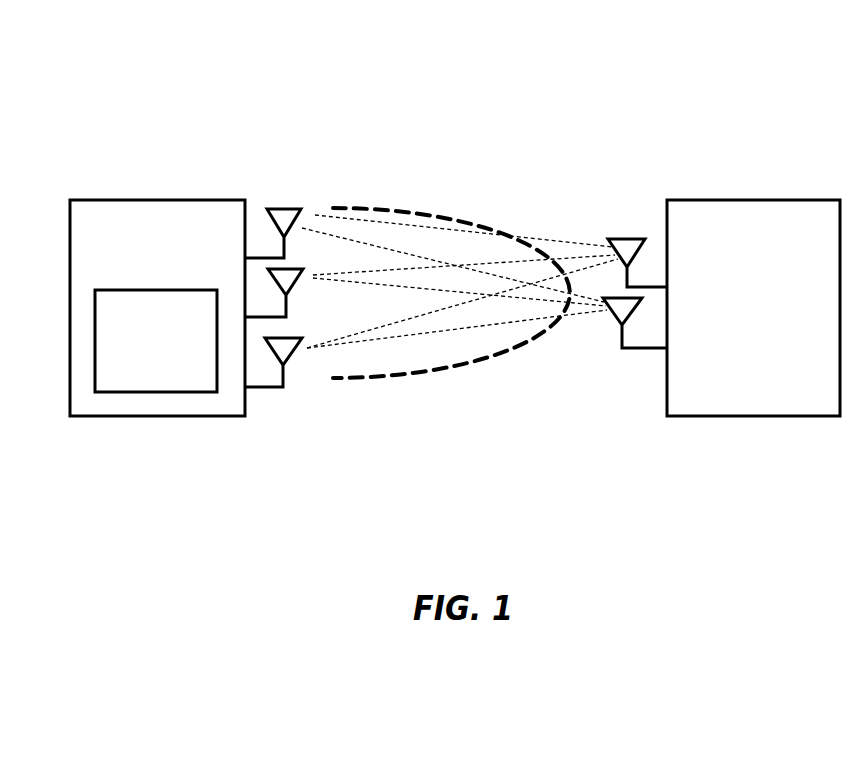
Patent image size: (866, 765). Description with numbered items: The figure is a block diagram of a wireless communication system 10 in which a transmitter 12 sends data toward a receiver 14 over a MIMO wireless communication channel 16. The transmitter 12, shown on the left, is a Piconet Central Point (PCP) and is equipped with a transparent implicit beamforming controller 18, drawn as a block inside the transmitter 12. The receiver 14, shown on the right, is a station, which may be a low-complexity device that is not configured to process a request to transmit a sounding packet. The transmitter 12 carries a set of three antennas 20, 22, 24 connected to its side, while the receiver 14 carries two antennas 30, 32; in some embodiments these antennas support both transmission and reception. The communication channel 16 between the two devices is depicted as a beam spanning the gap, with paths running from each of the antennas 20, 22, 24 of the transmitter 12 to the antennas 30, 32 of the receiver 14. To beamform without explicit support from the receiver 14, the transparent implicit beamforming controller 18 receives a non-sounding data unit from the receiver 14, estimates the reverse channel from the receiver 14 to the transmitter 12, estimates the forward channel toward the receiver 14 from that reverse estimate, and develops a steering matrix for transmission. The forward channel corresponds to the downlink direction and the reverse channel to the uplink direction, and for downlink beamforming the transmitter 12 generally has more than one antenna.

The wireless communication system 10 is at (361, 57).
The transmitter 12 is at (153, 416).
The receiver 14 is at (735, 416).
The MIMO wireless communication channel 16 is at (467, 163).
The transparent implicit beamforming controller 18 is at (93, 362).
The antenna 20 is at (281, 210).
The antenna 22 is at (294, 283).
The antenna 24 is at (292, 352).
The antenna 30 is at (630, 238).
The antenna 32 is at (611, 310).